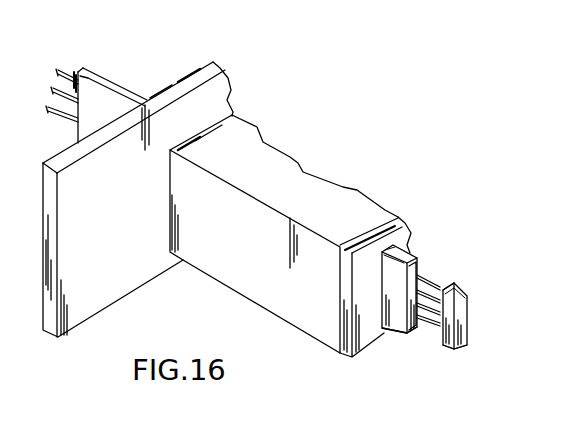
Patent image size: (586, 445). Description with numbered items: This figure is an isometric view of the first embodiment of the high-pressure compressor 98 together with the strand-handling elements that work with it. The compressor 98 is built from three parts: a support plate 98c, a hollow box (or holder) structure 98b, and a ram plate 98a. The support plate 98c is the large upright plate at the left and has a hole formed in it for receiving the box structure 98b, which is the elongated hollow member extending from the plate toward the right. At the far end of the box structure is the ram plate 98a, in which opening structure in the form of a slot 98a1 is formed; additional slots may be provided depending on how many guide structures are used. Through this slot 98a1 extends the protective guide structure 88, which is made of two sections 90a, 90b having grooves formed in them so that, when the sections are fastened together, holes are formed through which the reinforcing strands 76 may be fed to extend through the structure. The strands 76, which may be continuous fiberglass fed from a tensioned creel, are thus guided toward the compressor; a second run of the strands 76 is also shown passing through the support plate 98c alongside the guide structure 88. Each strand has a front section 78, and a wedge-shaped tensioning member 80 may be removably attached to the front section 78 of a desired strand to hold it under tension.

The reinforcing strands 76 is at (66, 68).
The front section 78 is at (446, 288).
The tensioning member 80 is at (460, 352).
The protective guide structure 88 is at (107, 75).
The section 90a is at (406, 334).
The section 90b is at (430, 272).
The high-pressure compressor 98 is at (309, 222).
The ram plate 98a is at (399, 217).
The slot 98a1 is at (421, 314).
The hollow box structure 98b is at (303, 170).
The support plate 98c is at (216, 62).